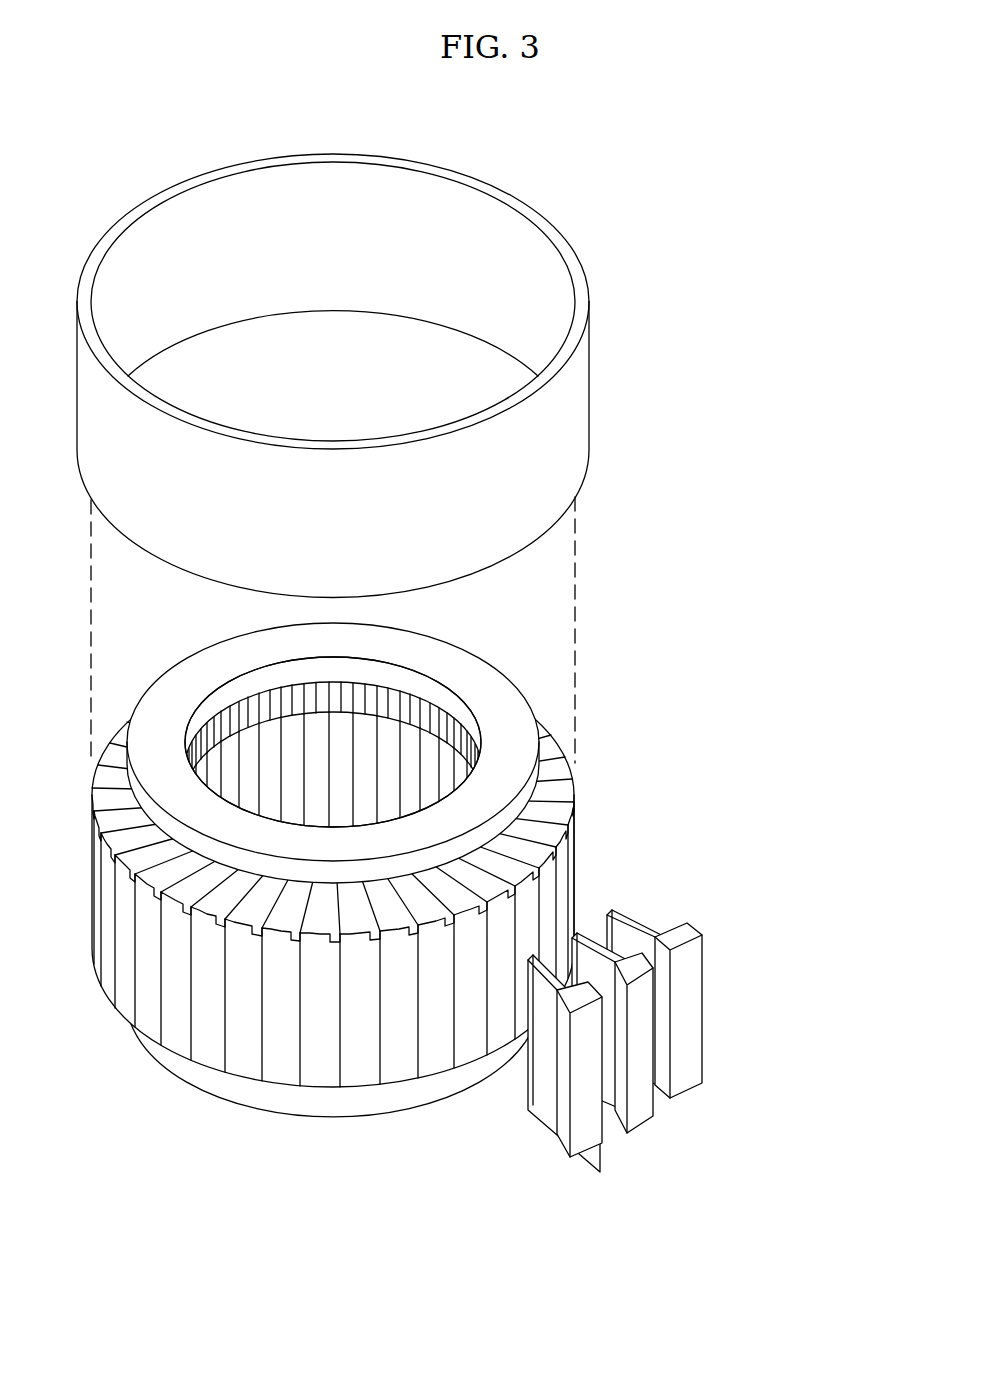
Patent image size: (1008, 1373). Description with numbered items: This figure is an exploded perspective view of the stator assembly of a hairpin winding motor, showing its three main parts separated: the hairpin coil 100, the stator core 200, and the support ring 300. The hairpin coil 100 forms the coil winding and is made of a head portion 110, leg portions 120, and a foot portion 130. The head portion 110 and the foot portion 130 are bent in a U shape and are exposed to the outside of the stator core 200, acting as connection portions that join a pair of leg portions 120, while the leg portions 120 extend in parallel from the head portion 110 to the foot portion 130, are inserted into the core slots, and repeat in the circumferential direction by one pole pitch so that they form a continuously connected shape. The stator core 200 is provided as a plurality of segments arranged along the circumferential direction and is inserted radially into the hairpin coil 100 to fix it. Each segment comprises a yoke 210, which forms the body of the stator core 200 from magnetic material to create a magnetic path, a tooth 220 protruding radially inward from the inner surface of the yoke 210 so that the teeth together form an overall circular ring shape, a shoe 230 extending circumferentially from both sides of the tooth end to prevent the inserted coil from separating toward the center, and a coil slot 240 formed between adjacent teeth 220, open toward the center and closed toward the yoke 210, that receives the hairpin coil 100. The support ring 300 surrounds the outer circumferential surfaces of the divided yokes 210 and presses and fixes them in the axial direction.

The hairpin coil 100 is at (437, 920).
The head portion 110 is at (502, 758).
The leg portions 120 is at (500, 882).
The foot portion 130 is at (288, 1102).
The stator core 200 is at (689, 999).
The yoke 210 is at (702, 947).
The tooth 220 is at (642, 923).
The shoe 230 is at (632, 938).
The coil slot 240 is at (633, 936).
The support ring 300 is at (578, 253).